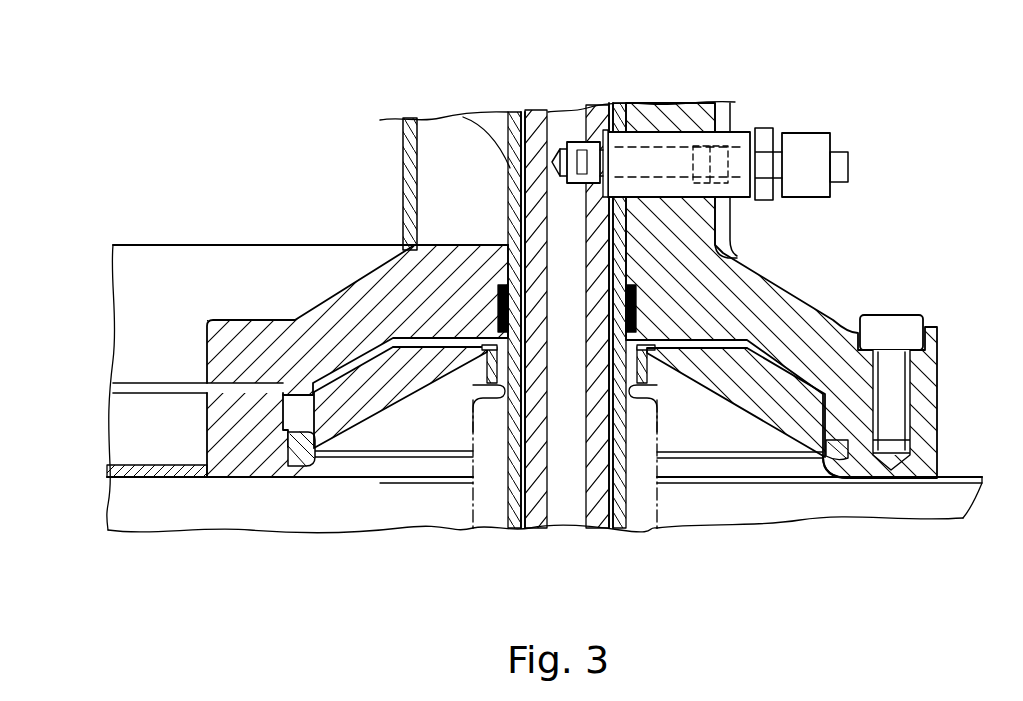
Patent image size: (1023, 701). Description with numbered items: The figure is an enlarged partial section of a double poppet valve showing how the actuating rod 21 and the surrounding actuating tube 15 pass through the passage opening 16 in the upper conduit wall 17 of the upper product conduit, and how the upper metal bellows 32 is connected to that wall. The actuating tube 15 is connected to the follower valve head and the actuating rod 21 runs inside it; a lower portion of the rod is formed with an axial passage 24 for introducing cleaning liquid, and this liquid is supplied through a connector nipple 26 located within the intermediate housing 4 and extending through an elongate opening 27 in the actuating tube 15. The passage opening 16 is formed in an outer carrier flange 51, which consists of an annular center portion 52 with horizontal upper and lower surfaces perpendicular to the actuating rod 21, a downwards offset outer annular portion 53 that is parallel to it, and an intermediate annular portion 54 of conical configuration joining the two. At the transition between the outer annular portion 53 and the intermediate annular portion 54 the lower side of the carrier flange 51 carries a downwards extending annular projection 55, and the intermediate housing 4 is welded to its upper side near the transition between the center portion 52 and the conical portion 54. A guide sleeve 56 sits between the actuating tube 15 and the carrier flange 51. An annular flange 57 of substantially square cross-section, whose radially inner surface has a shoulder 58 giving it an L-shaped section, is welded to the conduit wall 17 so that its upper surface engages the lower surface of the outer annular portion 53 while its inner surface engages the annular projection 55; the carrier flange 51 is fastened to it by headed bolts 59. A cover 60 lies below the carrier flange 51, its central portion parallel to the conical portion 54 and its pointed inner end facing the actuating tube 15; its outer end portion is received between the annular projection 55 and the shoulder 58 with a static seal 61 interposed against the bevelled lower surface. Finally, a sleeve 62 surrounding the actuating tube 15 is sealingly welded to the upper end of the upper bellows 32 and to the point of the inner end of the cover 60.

The intermediate housing 4 is at (410, 127).
The actuating tube 15 is at (517, 112).
The upper opening 16 is at (500, 243).
The upper conduit wall 17 is at (168, 478).
The actuating rod 21 is at (537, 115).
The axial passage 24 is at (568, 118).
The connector nipple 26 is at (812, 165).
The elongate opening 27 is at (620, 123).
The upper metal bellows 32 is at (470, 508).
The outer carrier flange 51 is at (775, 258).
The annular center portion 52 is at (690, 247).
The outer annular portion 53 is at (223, 351).
The intermediate annular portion 54 is at (357, 307).
The annular projection 55 is at (843, 398).
The guide sleeve 56 is at (645, 318).
The annular flange 57 is at (923, 442).
The shoulder 58 is at (845, 472).
The headed bolts 59 is at (900, 335).
The cover 60 is at (317, 408).
The static seal 61 is at (290, 450).
The sleeve 62 is at (482, 368).